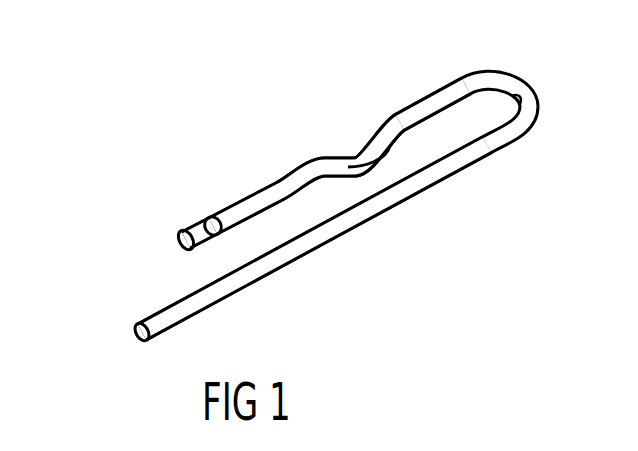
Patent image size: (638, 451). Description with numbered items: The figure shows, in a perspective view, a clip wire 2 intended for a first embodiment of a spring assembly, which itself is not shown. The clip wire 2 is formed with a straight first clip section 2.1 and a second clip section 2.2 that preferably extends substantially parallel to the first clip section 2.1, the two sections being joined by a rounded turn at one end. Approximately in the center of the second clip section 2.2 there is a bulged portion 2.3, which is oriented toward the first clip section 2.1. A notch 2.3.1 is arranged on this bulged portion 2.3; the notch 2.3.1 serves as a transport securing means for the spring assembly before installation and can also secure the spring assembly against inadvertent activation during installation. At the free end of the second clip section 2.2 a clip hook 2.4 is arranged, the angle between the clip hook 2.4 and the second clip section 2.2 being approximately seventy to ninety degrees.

The clip wire 2 is at (292, 175).
The first clip section 2.1 is at (331, 240).
The second clip section 2.2 is at (350, 146).
The bulged portion 2.3 is at (388, 143).
The notch 2.3.1 is at (390, 152).
The clip hook 2.4 is at (180, 238).